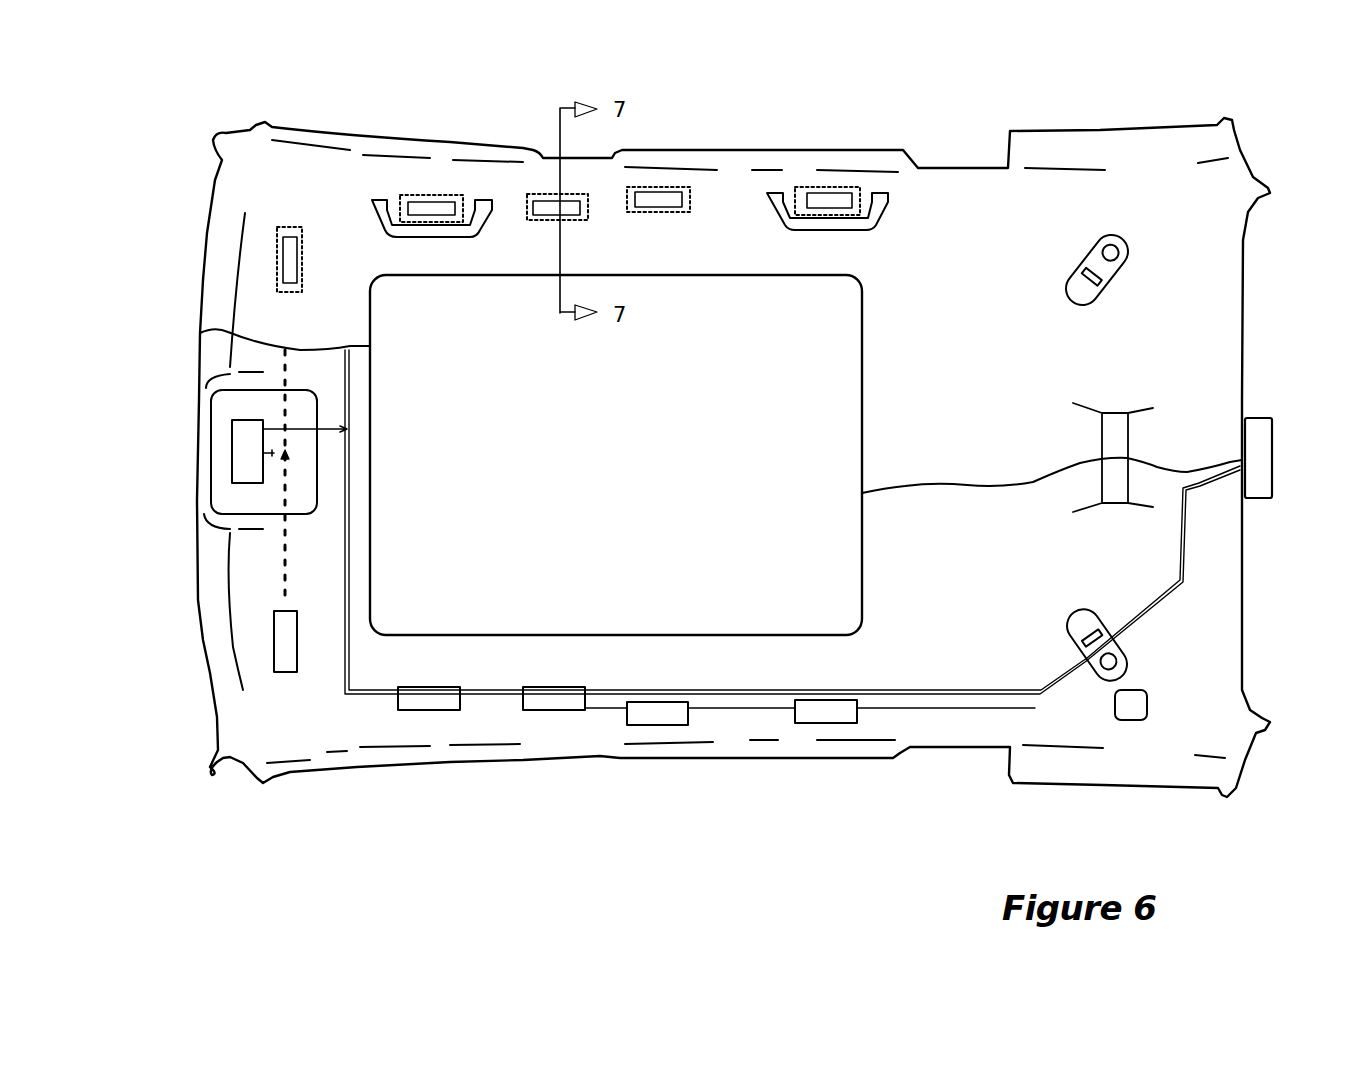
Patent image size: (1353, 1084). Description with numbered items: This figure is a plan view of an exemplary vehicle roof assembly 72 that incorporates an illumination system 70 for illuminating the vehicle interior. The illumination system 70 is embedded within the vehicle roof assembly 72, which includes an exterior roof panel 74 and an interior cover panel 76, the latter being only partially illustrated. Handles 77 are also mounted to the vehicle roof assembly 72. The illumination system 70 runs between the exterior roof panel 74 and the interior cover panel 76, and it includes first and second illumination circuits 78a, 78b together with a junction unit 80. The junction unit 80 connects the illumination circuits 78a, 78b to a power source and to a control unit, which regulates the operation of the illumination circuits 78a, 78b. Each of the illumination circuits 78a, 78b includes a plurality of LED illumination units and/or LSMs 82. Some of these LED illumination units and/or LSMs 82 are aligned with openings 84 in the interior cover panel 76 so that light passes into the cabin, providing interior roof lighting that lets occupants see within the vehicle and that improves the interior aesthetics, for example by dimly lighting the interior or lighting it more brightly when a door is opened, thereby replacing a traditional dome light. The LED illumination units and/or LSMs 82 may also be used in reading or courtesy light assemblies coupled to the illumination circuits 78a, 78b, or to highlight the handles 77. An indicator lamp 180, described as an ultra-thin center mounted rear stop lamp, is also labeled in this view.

The illumination system 70 is at (161, 357).
The vehicle roof assembly 72 is at (1247, 367).
The exterior roof panel 74 is at (862, 577).
The interior cover panel 76 is at (886, 491).
The handles 77 is at (407, 237).
The first illumination circuit 78a is at (345, 683).
The second illumination circuit 78b is at (285, 566).
The junction unit 80 is at (232, 444).
The LED illumination units and/or LSMs 82 is at (274, 644).
The openings 84 is at (572, 218).
The indicator lamp 180 is at (1255, 500).